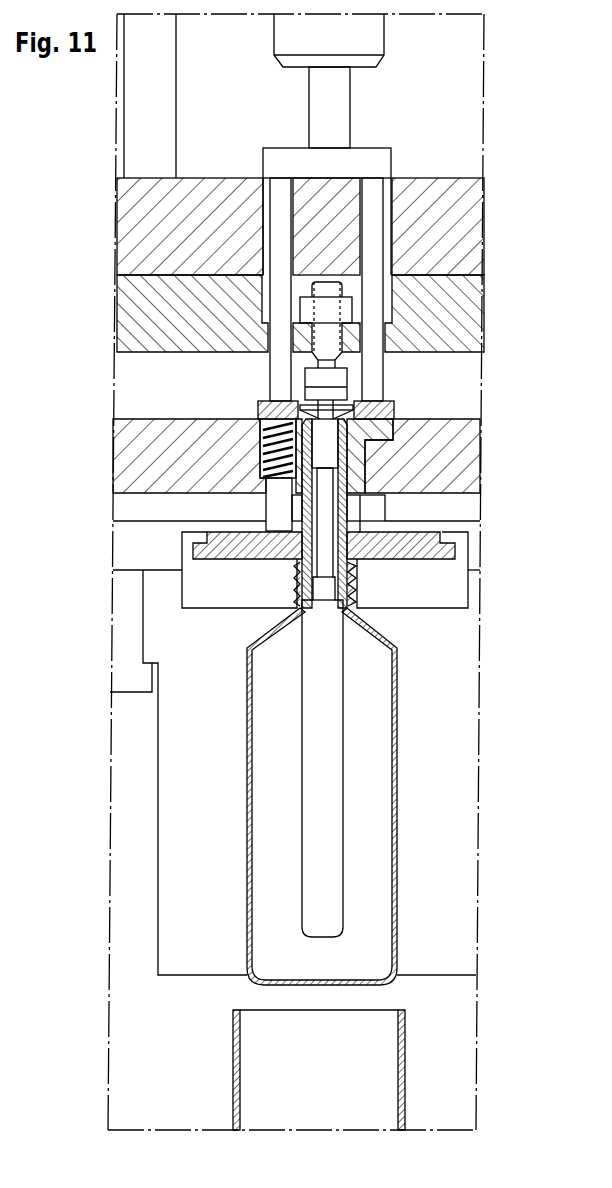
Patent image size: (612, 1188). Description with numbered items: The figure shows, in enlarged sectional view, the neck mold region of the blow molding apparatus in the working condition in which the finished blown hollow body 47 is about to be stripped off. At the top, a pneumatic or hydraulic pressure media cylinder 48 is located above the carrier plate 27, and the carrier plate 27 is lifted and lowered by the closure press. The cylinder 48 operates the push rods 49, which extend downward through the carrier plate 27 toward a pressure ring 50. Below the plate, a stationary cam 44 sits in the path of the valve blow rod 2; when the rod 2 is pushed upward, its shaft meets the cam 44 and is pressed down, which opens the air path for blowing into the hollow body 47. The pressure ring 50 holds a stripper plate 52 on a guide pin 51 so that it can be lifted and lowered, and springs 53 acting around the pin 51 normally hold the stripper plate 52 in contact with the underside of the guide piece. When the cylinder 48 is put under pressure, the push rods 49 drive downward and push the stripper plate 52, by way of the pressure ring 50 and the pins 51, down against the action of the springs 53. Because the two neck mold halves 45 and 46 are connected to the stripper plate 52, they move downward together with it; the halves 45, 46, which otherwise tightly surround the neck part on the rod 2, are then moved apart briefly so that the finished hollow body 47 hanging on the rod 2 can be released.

The valve blow rod 2 is at (330, 753).
The carrier plate 27 is at (143, 217).
The stationary cam 44 is at (333, 339).
The mold half 45 is at (267, 599).
The mold half 46 is at (407, 600).
The blown hollow body 47 is at (247, 724).
The pressure media cylinder 48 is at (340, 50).
The push rods 49 is at (374, 232).
The pressure ring 50 is at (258, 407).
The guide pin 51 is at (273, 504).
The stripper plate 52 is at (225, 540).
The springs 53 is at (275, 435).